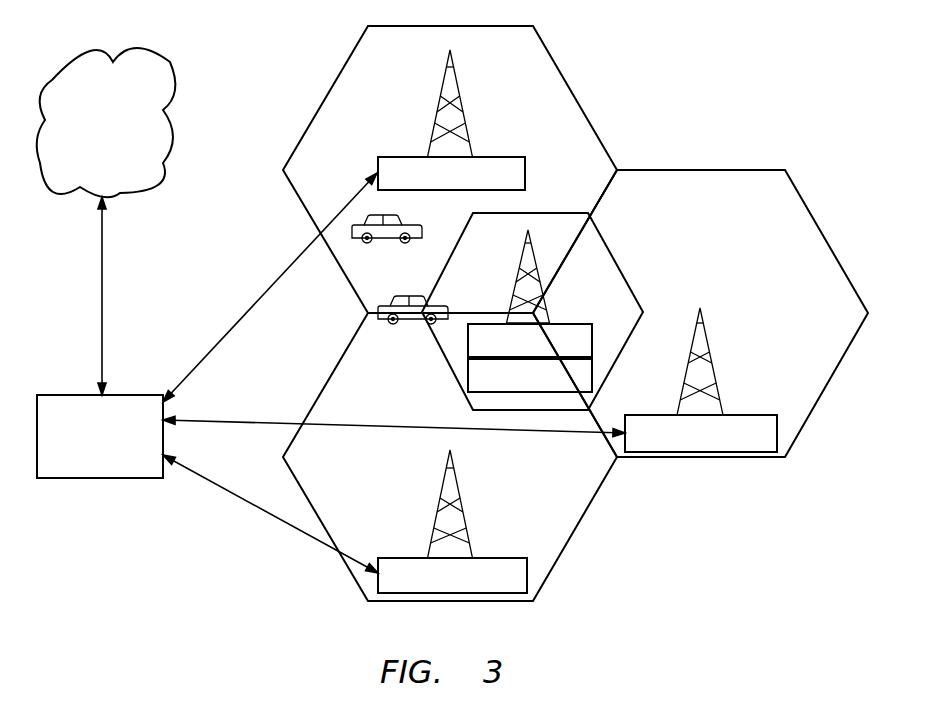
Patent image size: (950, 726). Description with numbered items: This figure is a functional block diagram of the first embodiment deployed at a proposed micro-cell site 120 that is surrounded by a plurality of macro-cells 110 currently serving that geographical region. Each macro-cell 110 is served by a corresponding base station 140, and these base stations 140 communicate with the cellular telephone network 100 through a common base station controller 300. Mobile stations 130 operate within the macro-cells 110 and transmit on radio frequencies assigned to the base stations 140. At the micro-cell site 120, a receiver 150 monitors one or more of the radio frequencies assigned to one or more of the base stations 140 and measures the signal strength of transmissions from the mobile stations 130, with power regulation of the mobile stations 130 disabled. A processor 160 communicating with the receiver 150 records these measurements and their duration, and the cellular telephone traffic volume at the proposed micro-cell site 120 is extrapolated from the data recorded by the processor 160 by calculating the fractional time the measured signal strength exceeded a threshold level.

The cellular telephone network 100 is at (153, 78).
The macro-cell 110 is at (547, 65).
The micro-cell 120 is at (595, 228).
The mobile station 130 is at (381, 233).
The base station 140 is at (500, 155).
The receiver 150 is at (583, 342).
The processor 160 is at (470, 372).
The base station controller 300 is at (132, 408).